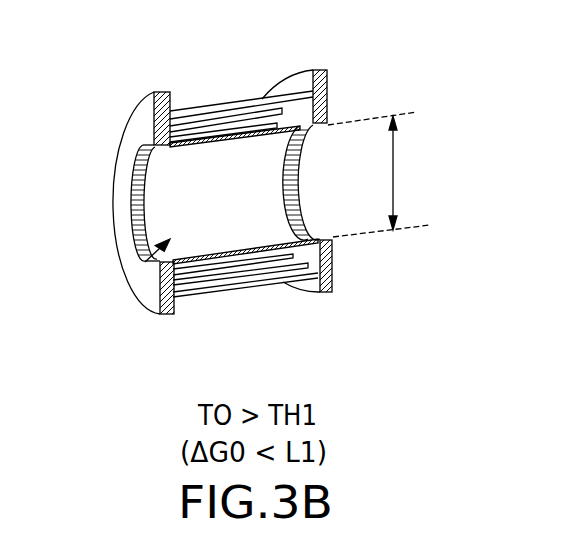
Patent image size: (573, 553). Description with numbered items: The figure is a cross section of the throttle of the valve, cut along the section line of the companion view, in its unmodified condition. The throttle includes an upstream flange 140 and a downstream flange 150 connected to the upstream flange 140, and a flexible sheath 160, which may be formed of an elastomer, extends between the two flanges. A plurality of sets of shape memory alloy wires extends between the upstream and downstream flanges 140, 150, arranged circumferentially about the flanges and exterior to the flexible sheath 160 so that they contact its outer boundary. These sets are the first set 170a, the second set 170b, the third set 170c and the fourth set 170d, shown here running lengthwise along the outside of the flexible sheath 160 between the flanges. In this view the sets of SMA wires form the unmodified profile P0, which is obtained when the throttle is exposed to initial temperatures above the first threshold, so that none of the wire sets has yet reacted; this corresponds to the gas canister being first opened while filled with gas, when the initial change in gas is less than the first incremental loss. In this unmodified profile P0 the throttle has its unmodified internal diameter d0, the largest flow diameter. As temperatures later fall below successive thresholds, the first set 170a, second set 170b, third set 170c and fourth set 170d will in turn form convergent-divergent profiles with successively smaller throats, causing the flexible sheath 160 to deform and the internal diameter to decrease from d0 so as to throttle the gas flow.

The upstream flange 140 is at (133, 120).
The downstream flange 150 is at (320, 290).
The flexible sheath 160 is at (212, 187).
The first set of SMA wires 170a is at (243, 130).
The second set of SMA wires 170b is at (192, 283).
The third set of SMA wires 170c is at (253, 264).
The fourth set of SMA wires 170d is at (287, 282).
The unmodified profile P0 is at (145, 262).
The unmodified internal diameter d0 is at (379, 174).